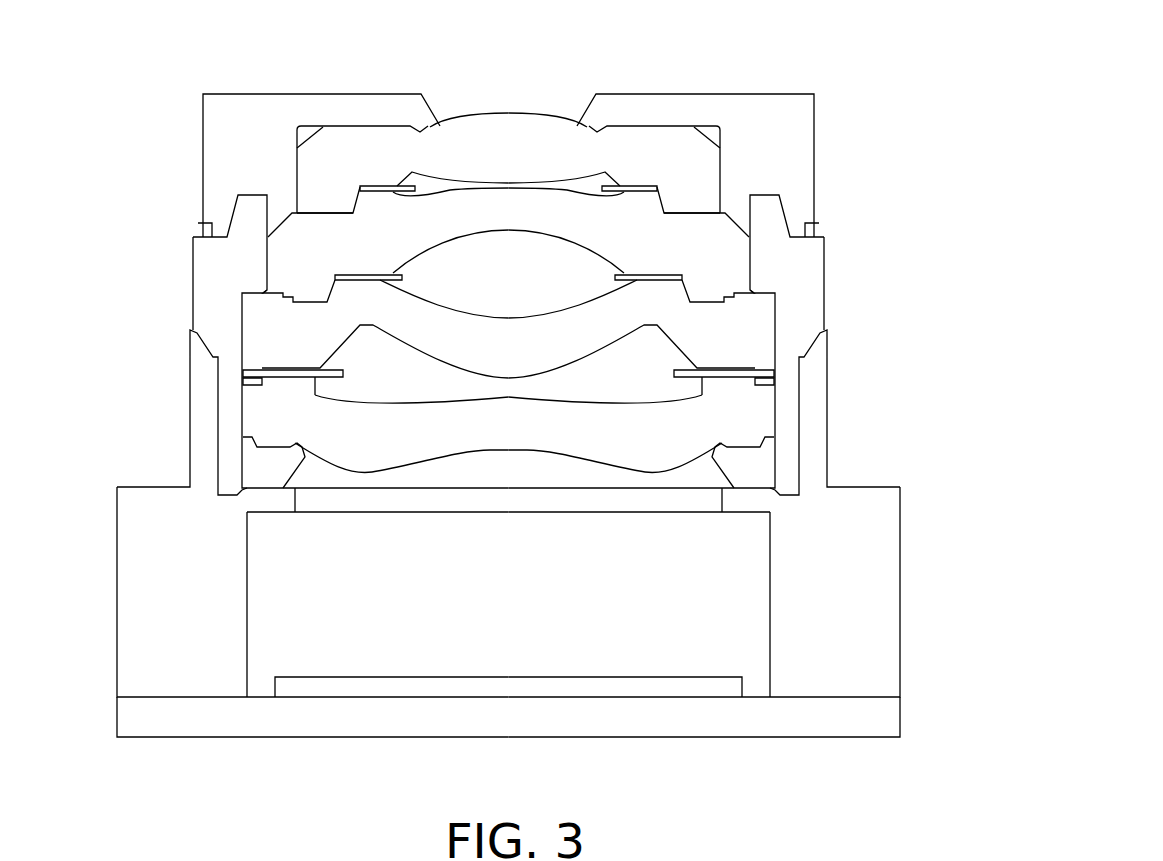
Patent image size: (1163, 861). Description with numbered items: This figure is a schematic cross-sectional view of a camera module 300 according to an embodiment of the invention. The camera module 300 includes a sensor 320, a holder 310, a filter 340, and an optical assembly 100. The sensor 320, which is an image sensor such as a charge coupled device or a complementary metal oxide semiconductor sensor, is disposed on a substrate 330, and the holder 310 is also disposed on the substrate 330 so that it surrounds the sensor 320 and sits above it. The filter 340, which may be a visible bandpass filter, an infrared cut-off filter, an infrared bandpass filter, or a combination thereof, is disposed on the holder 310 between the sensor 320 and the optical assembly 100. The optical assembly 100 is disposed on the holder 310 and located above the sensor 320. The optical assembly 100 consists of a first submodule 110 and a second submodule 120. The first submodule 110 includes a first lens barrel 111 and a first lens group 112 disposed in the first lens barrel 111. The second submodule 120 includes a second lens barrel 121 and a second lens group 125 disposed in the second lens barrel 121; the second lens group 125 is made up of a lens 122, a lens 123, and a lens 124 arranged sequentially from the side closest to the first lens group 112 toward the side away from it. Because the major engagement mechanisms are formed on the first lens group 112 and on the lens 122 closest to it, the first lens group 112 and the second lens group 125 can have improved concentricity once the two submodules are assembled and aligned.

The optical assembly 100 is at (601, 255).
The first submodule 110 is at (560, 129).
The first lens barrel 111 is at (295, 110).
The first lens group 112 is at (315, 165).
The second submodule 120 is at (623, 321).
The second lens barrel 121 is at (772, 218).
The lens 122 is at (727, 263).
The lens 123 is at (748, 335).
The lens 124 is at (603, 418).
The second lens group 125 is at (614, 343).
The camera module 300 is at (594, 415).
The holder 310 is at (202, 477).
The sensor 320 is at (305, 685).
The substrate 330 is at (578, 722).
The filter 340 is at (708, 500).